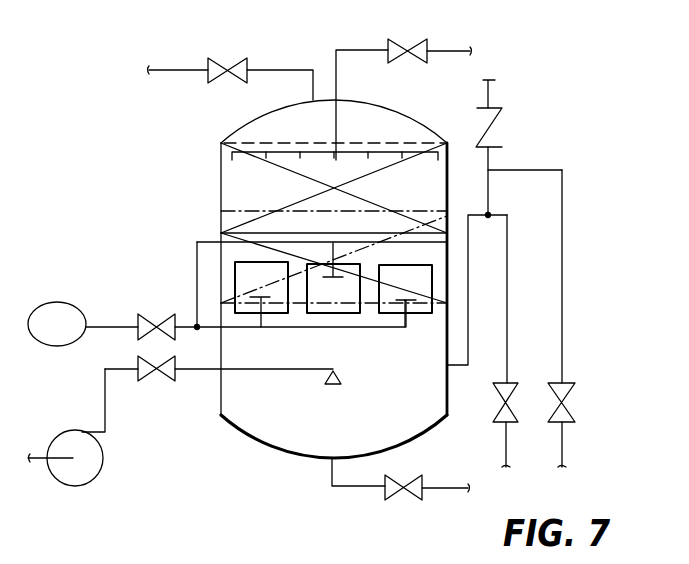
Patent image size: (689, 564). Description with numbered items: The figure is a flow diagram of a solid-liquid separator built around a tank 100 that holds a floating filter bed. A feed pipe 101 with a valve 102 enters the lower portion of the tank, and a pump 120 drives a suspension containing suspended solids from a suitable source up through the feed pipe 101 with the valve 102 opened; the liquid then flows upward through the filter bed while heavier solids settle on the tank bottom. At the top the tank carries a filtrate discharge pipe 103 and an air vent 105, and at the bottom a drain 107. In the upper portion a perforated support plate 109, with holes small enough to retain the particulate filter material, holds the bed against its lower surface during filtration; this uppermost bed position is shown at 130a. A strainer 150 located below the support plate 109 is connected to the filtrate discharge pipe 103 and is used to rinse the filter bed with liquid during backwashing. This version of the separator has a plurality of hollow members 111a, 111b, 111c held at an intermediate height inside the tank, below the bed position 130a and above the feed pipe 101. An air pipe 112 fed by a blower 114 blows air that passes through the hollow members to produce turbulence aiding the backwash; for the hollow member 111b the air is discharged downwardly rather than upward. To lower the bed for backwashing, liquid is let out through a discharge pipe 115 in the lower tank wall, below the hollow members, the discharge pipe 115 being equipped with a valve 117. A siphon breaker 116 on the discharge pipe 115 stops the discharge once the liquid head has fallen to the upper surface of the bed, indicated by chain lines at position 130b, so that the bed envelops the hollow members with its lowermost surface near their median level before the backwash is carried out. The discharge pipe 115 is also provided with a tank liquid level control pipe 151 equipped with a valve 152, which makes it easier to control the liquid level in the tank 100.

The tank 100 is at (266, 448).
The feed pipe 101 is at (196, 370).
The valve 102 is at (157, 379).
The filtrate discharge pipe 103 is at (358, 50).
The air vent 105 is at (178, 70).
The drain 107 is at (361, 487).
The perforated support plate 109 is at (387, 143).
The hollow member 111a is at (251, 312).
The hollow member 111b is at (337, 313).
The hollow member 111c is at (419, 313).
The air pipe 112 is at (103, 323).
The blower 114 is at (57, 302).
The discharge pipe 115 is at (458, 366).
The siphon breaker 116 is at (499, 120).
The valve 117 is at (508, 425).
The pump 120 is at (97, 477).
The filter bed uppermost position 130a is at (228, 173).
The filter bed lowered position 130b is at (228, 220).
The strainer 150 is at (277, 150).
The tank liquid level control pipe 151 is at (562, 270).
The valve 152 is at (563, 402).